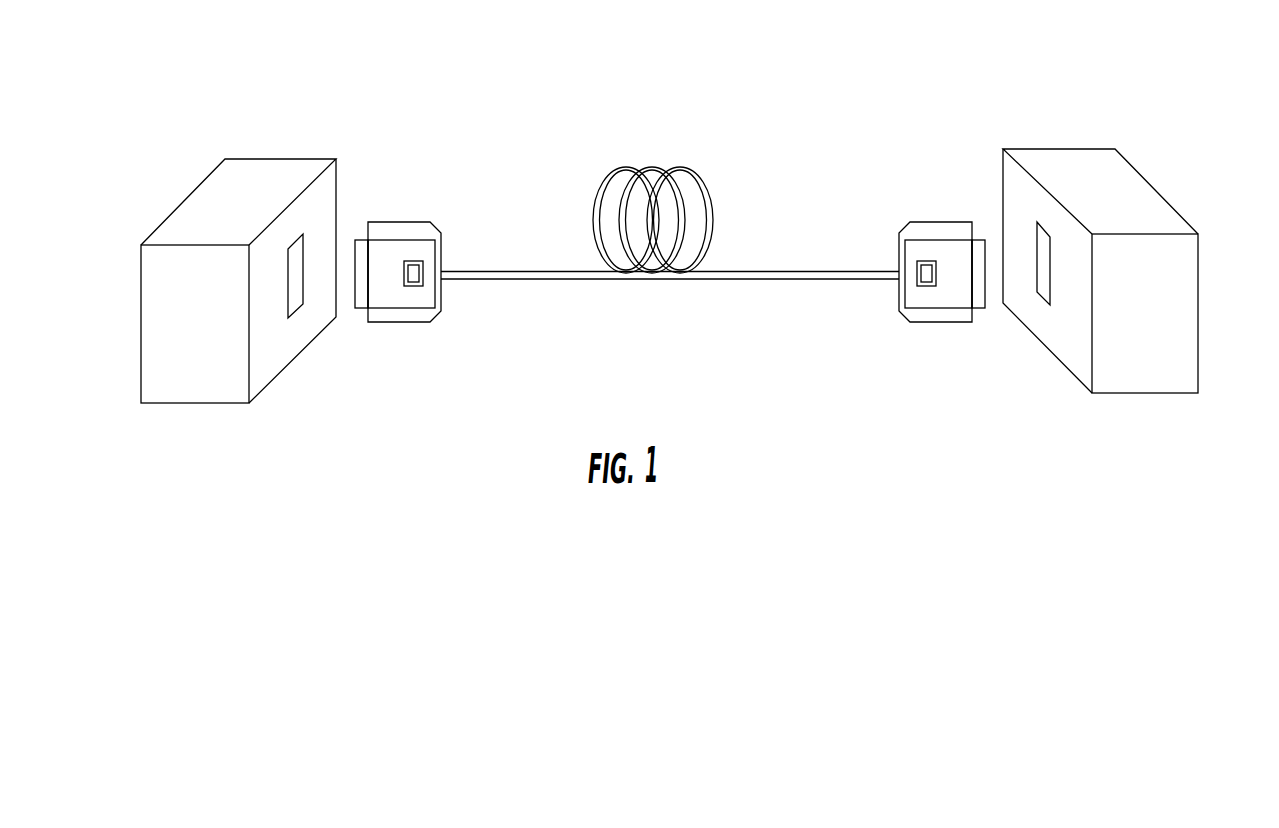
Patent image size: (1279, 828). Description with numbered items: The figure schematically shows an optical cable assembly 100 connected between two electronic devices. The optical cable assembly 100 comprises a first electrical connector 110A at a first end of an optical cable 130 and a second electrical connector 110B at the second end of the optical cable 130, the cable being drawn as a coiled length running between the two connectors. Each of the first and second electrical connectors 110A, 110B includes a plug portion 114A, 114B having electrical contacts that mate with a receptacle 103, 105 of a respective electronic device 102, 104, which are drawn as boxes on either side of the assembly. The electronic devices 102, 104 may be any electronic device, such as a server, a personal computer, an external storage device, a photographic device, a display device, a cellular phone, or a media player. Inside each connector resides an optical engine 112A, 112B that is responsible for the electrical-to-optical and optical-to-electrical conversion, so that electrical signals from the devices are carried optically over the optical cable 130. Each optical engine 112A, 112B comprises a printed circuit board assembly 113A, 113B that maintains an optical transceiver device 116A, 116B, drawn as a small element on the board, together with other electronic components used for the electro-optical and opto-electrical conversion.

The optical cable assembly 100 is at (223, 98).
The electronic device 102 is at (167, 218).
The receptacle 103 is at (300, 303).
The electronic device 104 is at (1157, 190).
The receptacle 105 is at (1048, 303).
The first electrical connector 110A is at (430, 323).
The second electrical connector 110B is at (905, 313).
The optical engine 112A is at (387, 232).
The optical engine 112B is at (952, 237).
The printed circuit board assembly 113A is at (390, 297).
The printed circuit board assembly 113B is at (948, 290).
The plug portion 114A is at (358, 240).
The plug portion 114B is at (982, 240).
The optical transceiver device 116A is at (415, 252).
The optical transceiver device 116B is at (920, 252).
The optical cable 130 is at (585, 273).